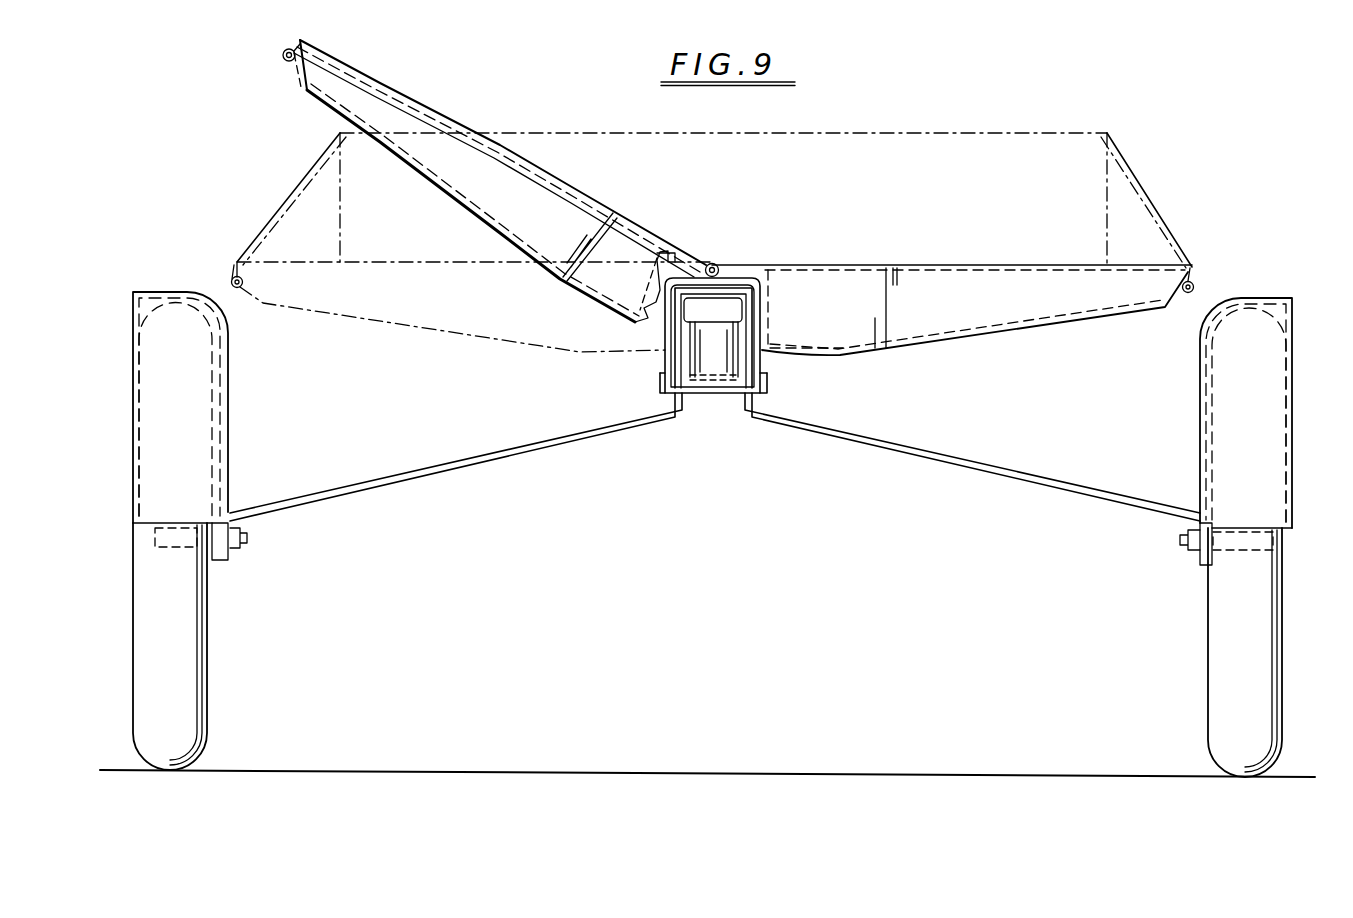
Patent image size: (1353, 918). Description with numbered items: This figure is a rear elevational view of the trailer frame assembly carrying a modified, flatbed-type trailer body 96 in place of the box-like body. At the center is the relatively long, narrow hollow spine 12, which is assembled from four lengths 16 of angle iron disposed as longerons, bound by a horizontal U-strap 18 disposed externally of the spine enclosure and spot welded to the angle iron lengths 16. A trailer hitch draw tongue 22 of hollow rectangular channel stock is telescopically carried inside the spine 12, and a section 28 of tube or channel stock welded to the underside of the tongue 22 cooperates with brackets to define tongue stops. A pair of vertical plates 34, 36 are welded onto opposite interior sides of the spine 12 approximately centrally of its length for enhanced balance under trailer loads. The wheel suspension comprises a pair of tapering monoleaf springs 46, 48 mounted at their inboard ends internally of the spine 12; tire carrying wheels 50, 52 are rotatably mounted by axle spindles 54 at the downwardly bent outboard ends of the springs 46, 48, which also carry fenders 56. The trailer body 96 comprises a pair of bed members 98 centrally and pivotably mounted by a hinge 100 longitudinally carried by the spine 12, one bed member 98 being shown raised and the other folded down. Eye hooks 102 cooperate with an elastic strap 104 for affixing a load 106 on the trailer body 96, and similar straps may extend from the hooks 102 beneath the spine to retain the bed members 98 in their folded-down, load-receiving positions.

The spine 12 is at (698, 426).
The angle iron lengths 16 is at (763, 290).
The upper horizontal U-strap 18 is at (682, 278).
The trailer hitch draw tongue 22 is at (760, 283).
The tube or channel stock section 28 is at (728, 355).
The vertical plate 34 is at (755, 356).
The vertical plate 36 is at (670, 340).
The monoleaf spring 46 is at (436, 474).
The monoleaf spring 48 is at (992, 478).
The tire carrying wheel 50 is at (195, 700).
The tire carrying wheel 52 is at (1227, 710).
The axle spindle 54 is at (167, 545).
The fender 56 is at (173, 290).
The trailer body 96 is at (949, 256).
The bed member 98 is at (447, 115).
The hinge 100 is at (716, 264).
The eye hook 102 is at (286, 63).
The elastic strap 104 is at (1160, 207).
The load 106 is at (1085, 180).